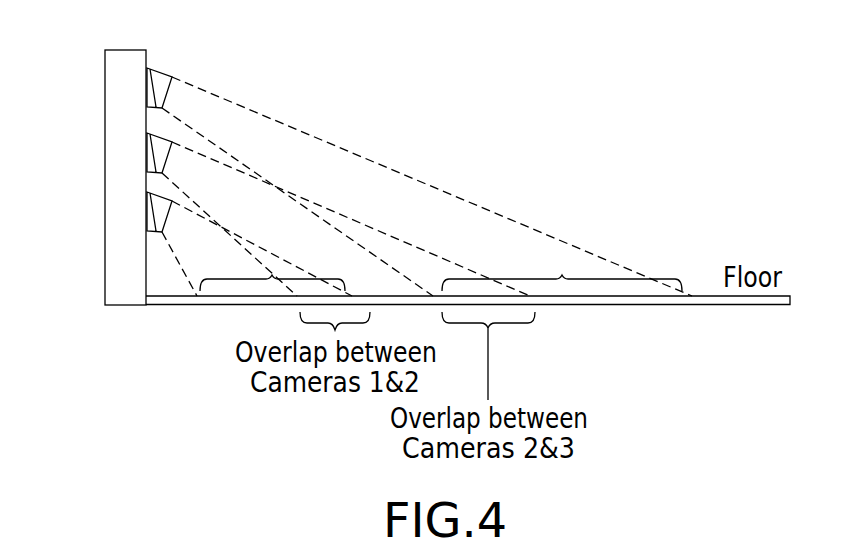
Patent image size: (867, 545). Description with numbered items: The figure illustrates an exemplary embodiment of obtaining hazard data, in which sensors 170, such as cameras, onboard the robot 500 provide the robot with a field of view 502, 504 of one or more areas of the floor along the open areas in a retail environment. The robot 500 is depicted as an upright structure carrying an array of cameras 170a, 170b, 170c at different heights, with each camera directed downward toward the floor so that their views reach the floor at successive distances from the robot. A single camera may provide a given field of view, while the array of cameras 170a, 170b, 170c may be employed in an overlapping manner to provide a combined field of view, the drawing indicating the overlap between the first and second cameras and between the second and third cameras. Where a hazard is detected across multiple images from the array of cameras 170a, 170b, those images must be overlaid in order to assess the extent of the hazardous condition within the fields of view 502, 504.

The robot 500 is at (125, 65).
The sensors 170 is at (361, 171).
The camera 170a is at (168, 91).
The camera 170b is at (167, 155).
The camera 170c is at (172, 216).
The field of view 502 is at (272, 275).
The field of view 504 is at (562, 275).